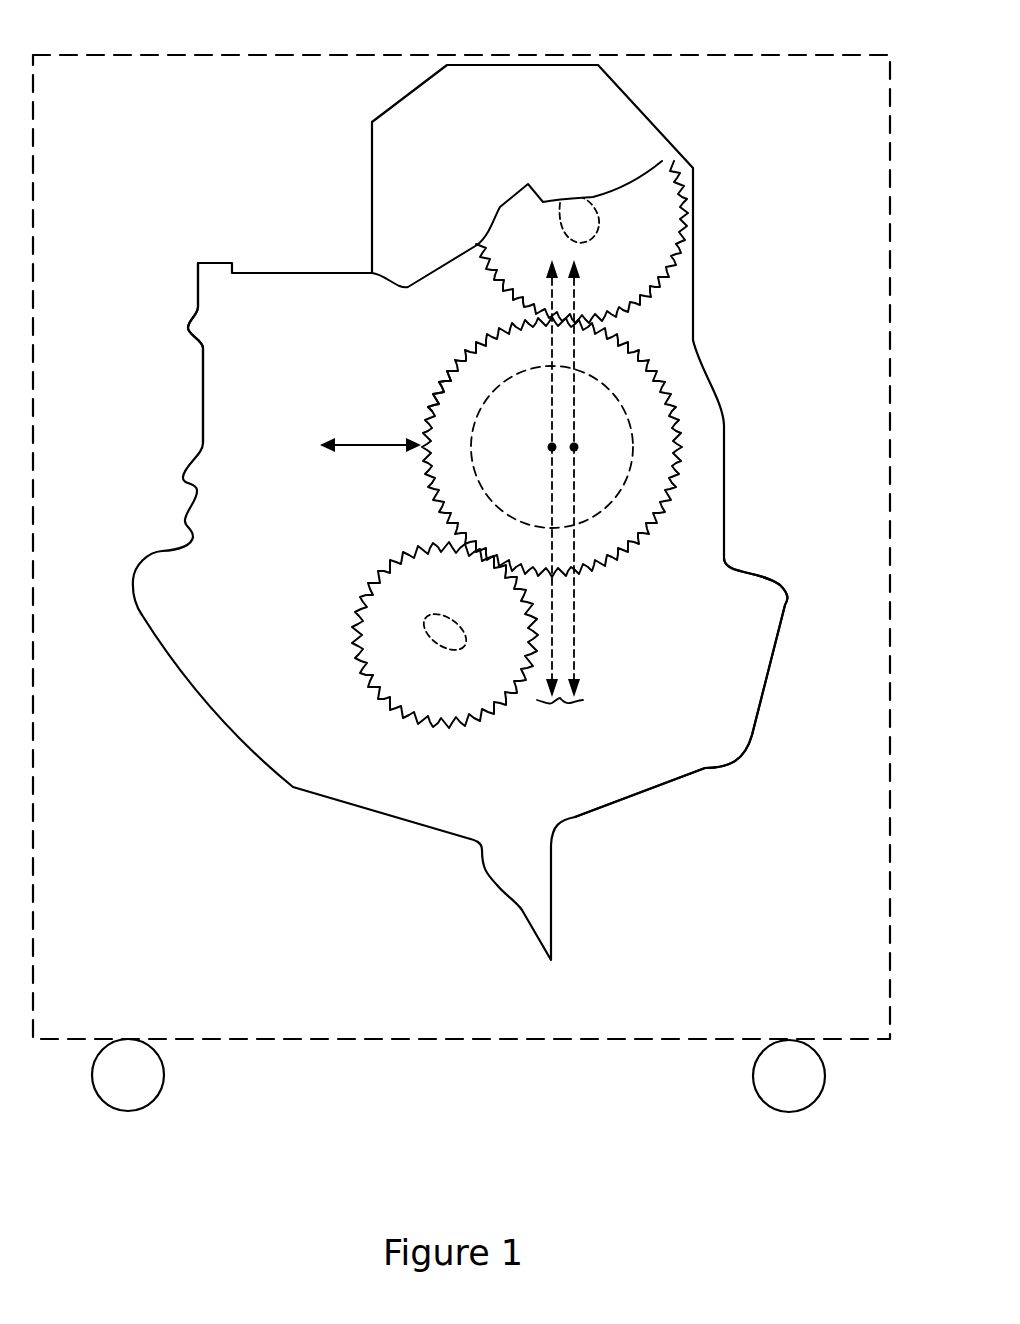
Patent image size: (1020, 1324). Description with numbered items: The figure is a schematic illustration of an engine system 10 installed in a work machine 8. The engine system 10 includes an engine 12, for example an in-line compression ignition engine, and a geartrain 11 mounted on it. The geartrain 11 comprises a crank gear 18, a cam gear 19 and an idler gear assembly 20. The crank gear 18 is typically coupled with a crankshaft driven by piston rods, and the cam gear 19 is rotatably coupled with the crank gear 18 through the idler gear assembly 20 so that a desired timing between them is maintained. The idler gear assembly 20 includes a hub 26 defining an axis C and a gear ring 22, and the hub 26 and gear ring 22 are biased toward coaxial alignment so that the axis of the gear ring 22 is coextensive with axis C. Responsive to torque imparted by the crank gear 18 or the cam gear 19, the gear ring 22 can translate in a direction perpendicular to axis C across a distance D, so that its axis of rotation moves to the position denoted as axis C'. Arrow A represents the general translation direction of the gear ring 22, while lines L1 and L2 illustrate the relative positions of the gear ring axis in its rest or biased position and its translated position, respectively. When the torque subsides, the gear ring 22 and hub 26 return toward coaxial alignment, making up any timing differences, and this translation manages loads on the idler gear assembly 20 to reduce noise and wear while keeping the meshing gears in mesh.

The work machine 8 is at (682, 57).
The engine system 10 is at (180, 267).
The geartrain 11 is at (642, 643).
The engine 12 is at (240, 413).
The crank gear 18 is at (482, 716).
The cam gear 19 is at (687, 245).
The idler gear assembly 20 is at (657, 443).
The gear ring 22 is at (437, 412).
The hub 26 is at (483, 493).
The line L1 is at (552, 360).
The line L2 is at (575, 360).
The axis C is at (525, 424).
The axis C' is at (595, 469).
The arrow A is at (367, 452).
The distance D is at (560, 710).